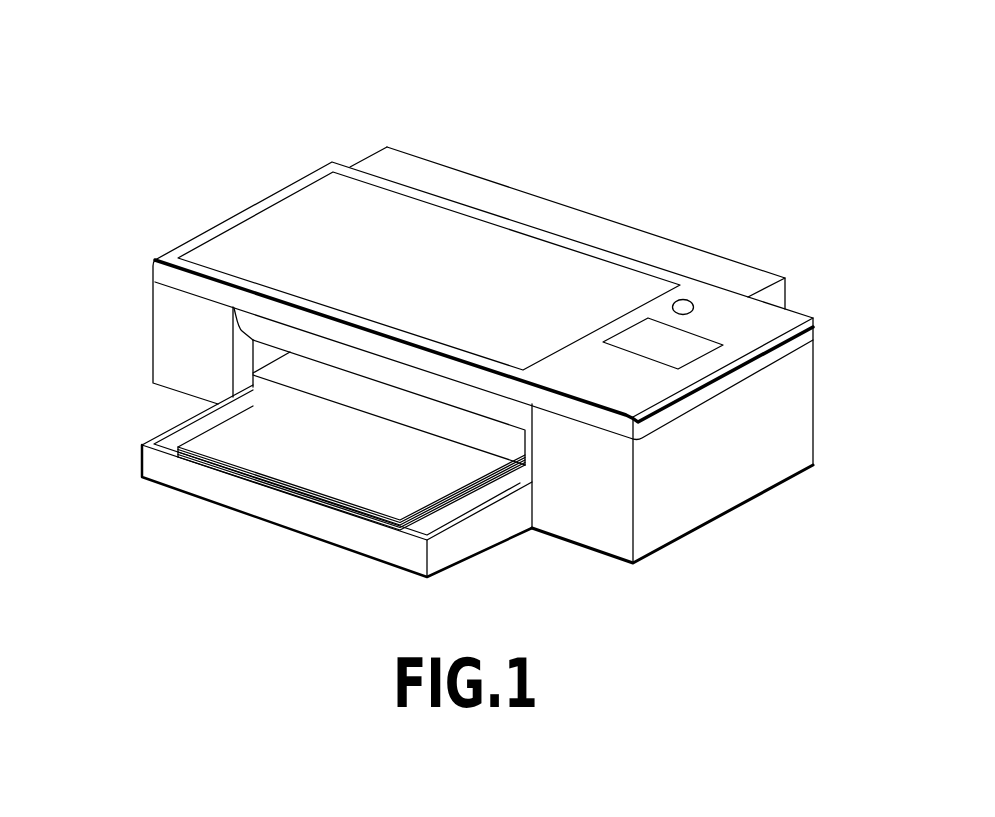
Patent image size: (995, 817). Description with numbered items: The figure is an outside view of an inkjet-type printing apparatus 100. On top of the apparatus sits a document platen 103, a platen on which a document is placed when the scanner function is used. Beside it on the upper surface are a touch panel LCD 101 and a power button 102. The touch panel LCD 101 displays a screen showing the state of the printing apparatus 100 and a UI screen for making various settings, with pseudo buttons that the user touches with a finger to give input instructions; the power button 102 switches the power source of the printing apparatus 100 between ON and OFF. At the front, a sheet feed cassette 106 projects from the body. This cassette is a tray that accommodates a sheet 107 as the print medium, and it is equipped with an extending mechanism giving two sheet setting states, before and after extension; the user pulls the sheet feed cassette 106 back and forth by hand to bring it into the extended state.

The printing apparatus 100 is at (610, 92).
The touch panel LCD 101 is at (687, 350).
The power button 102 is at (684, 300).
The document platen 103 is at (320, 197).
The sheet feed cassette 106 is at (180, 424).
The sheet 107 is at (305, 460).